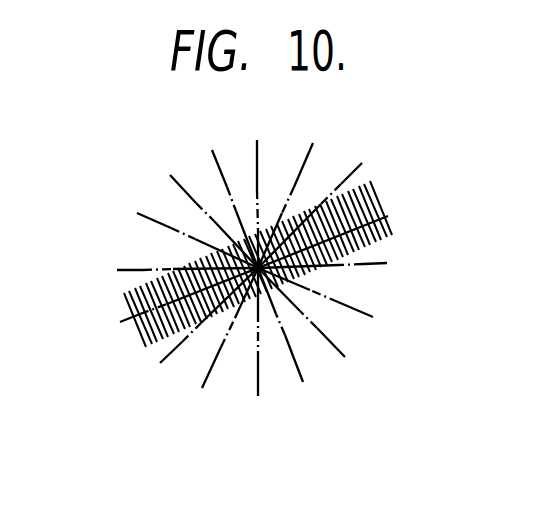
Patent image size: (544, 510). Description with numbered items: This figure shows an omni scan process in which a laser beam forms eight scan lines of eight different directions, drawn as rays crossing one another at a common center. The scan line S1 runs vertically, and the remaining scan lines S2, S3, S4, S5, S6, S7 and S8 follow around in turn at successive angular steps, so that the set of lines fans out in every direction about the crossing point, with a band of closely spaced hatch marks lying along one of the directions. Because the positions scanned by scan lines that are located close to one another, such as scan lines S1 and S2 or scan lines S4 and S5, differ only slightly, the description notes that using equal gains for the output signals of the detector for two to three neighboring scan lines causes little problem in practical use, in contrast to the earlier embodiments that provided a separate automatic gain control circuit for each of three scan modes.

The scan line S1 is at (256, 152).
The scan line S2 is at (311, 149).
The scan line S3 is at (357, 174).
The scan line S4 is at (388, 216).
The scan line S5 is at (374, 264).
The scan line S6 is at (370, 313).
The scan line S7 is at (345, 358).
The scan line S8 is at (303, 382).